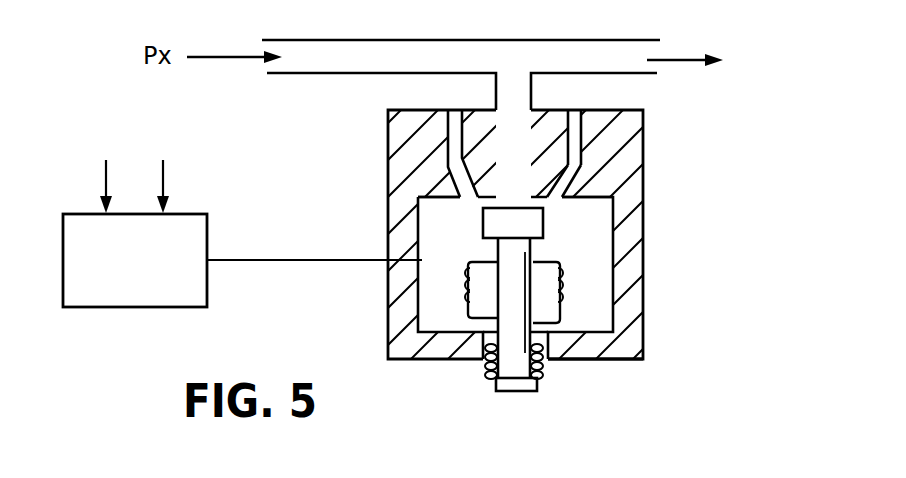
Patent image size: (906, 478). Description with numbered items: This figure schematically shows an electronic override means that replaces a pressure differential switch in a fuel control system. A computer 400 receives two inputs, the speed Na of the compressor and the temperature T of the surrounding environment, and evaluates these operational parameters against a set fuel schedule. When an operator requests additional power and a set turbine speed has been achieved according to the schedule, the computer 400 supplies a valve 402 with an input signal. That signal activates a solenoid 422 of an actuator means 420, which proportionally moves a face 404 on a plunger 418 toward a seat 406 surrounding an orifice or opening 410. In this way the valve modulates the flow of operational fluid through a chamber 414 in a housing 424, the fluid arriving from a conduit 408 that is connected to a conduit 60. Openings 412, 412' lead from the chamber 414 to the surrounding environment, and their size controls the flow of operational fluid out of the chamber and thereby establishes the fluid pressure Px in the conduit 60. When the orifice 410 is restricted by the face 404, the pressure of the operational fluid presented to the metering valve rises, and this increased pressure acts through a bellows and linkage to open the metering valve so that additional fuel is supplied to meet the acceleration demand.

The conduit 60 is at (537, 39).
The computer 400 is at (73, 297).
The valve 402 is at (660, 297).
The face 404 is at (545, 223).
The seat 406 is at (547, 197).
The conduit 408 is at (537, 90).
The orifice 410 is at (485, 103).
The opening 412 is at (408, 147).
The opening 412' is at (656, 151).
The chamber 414 is at (600, 257).
The plunger 418 is at (513, 362).
The actuator means 420 is at (436, 285).
The solenoid 422 is at (475, 308).
The housing 424 is at (633, 337).